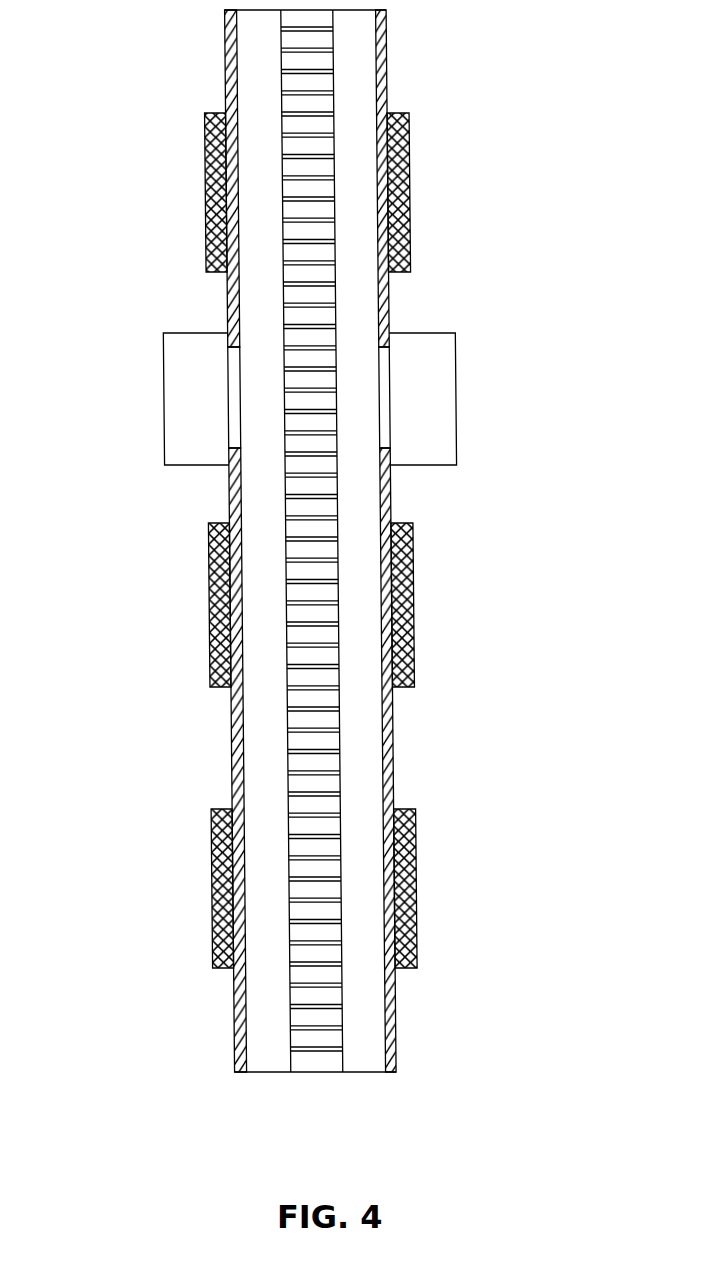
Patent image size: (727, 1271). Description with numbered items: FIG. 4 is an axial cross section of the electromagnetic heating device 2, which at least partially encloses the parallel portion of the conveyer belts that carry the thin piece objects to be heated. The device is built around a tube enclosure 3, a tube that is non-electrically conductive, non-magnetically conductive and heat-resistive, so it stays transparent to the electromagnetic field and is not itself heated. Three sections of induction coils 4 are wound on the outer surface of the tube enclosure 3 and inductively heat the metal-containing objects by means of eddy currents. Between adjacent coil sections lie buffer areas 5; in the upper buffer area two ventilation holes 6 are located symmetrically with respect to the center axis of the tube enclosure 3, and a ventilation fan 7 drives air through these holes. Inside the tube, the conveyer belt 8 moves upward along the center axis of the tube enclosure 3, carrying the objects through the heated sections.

The electromagnetic heating device 2 is at (475, 119).
The tube enclosure 3 is at (394, 751).
The induction coil 4 is at (207, 150).
The buffer area 5 is at (213, 316).
The ventilation hole 6 is at (233, 399).
The ventilation fan 7 is at (420, 392).
The conveyer belt 8 is at (315, 955).